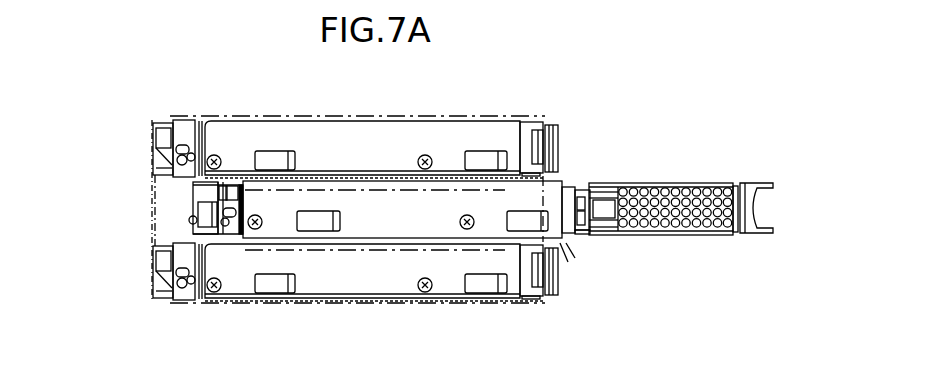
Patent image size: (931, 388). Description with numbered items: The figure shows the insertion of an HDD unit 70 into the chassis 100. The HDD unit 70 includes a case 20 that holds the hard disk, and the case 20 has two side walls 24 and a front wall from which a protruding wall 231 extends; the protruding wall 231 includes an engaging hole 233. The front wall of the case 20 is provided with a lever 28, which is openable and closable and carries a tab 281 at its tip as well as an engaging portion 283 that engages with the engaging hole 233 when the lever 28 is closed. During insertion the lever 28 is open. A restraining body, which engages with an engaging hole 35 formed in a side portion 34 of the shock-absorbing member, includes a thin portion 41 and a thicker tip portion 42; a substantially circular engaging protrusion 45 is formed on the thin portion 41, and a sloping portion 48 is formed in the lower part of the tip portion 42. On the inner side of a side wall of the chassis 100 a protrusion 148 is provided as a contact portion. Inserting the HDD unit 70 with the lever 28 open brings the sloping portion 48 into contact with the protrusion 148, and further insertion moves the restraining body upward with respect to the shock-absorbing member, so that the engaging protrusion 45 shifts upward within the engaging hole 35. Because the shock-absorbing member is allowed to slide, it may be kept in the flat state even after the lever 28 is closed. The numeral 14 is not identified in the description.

The chassis 100 is at (150, 190).
The bracket 14 is at (155, 160).
The thin portion 41 is at (224, 196).
The side portion 34 is at (230, 196).
The HDD unit 70 is at (365, 122).
The side wall 24 is at (425, 170).
The engaging hole 233 is at (597, 187).
The lever 28 is at (661, 183).
The tip portion 42 is at (203, 208).
The protrusion 148 is at (189, 220).
The sloping portion 48 is at (192, 225).
The engaging protrusion 45 is at (223, 226).
The engaging hole 35 is at (230, 227).
The case 20 is at (560, 240).
The protruding wall 231 is at (577, 233).
The engaging portion 283 is at (735, 232).
The tab 281 is at (767, 233).